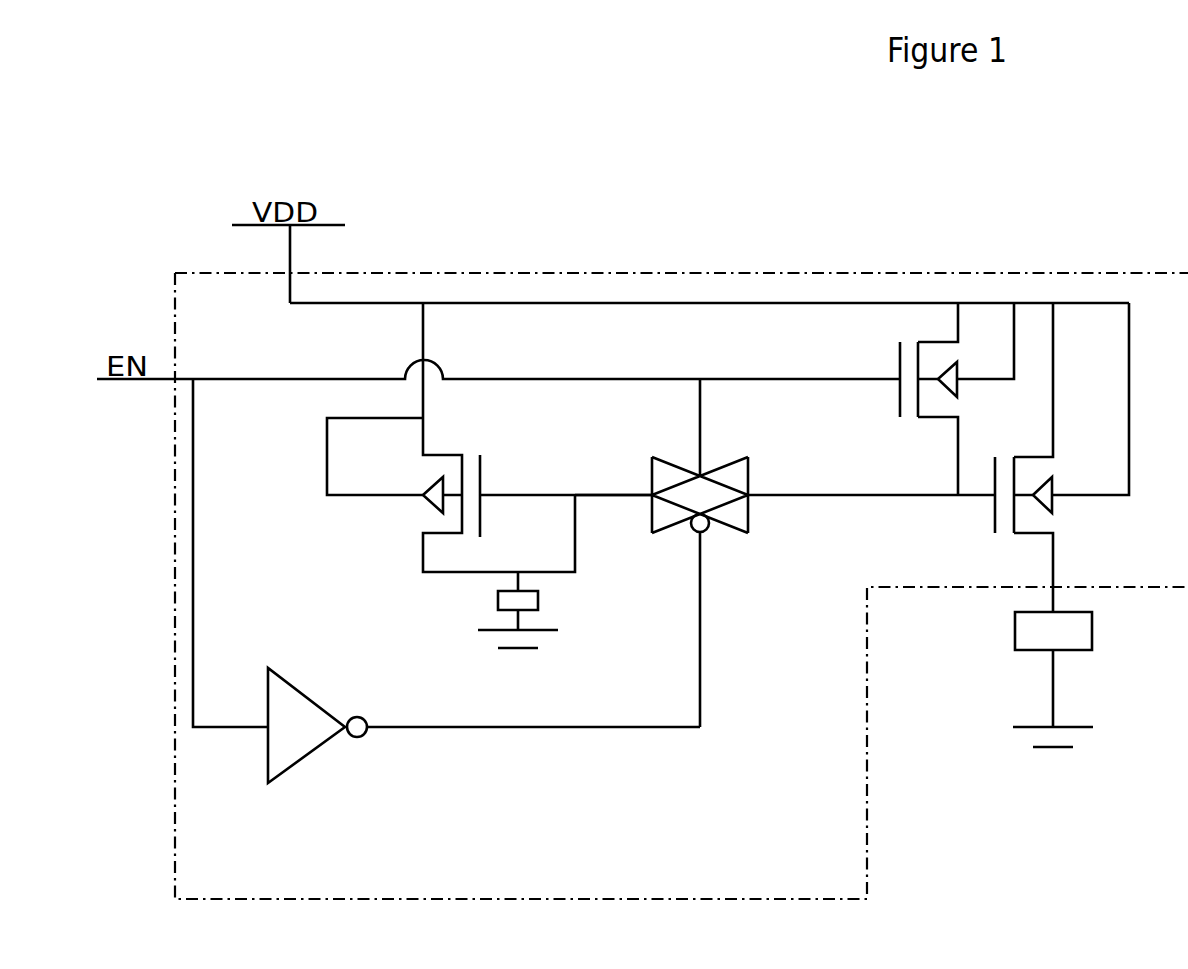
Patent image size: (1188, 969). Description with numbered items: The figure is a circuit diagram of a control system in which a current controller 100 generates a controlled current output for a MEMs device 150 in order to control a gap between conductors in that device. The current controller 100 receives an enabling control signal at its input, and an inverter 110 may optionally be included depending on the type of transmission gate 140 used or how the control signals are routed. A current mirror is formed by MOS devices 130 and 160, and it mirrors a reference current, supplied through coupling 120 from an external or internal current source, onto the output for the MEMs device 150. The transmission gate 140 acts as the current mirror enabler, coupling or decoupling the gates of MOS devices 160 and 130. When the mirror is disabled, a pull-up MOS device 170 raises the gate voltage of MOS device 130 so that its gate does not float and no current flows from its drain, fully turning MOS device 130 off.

The current controller 100 is at (681, 586).
The inverter 110 is at (312, 758).
The coupling 120 is at (495, 600).
The MOS device 130 is at (991, 518).
The transmission gate 140 is at (749, 538).
The MEMs device 150 is at (1012, 633).
The MOS device 160 is at (486, 471).
The pull-up MOS device 170 is at (896, 395).